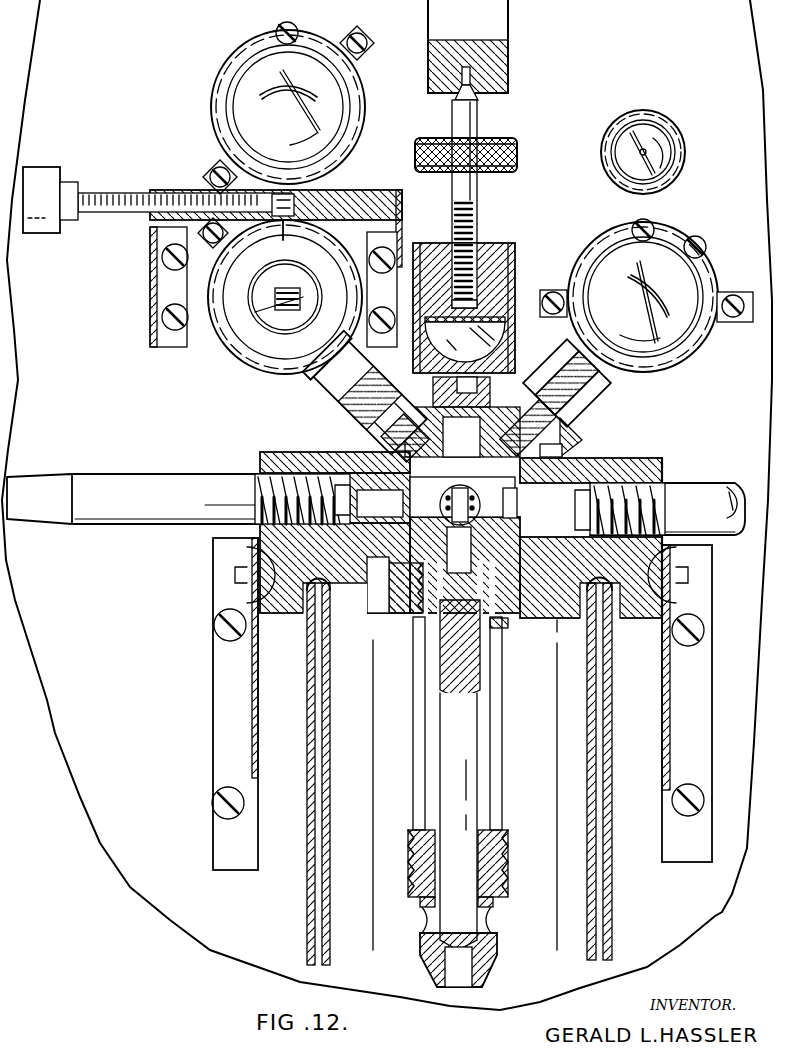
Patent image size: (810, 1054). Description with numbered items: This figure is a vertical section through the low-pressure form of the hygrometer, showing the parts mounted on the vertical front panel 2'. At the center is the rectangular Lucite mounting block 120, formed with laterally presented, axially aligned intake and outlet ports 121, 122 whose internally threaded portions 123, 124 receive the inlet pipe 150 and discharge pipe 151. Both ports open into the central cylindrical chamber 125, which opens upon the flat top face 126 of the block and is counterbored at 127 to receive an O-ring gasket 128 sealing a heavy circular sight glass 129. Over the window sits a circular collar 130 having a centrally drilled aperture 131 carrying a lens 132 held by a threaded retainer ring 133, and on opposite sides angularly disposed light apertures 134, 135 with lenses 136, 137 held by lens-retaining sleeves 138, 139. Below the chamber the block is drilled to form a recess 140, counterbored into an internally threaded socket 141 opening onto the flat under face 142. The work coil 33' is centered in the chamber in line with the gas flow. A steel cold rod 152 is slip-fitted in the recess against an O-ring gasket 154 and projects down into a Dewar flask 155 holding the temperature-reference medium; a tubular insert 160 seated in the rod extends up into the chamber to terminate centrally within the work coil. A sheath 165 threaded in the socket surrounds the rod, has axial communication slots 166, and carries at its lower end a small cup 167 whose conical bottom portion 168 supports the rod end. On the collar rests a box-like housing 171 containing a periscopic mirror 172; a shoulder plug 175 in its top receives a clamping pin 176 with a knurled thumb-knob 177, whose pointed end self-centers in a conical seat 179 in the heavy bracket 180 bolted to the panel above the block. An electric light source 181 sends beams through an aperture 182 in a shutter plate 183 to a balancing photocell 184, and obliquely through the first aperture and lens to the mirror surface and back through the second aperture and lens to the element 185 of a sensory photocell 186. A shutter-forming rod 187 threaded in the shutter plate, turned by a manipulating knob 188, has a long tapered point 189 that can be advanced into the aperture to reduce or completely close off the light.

The front panel 2' is at (387, 505).
The work coil 33' is at (462, 501).
The mounting block 120 is at (628, 620).
The intake port 121 is at (340, 458).
The outlet port 122 is at (592, 436).
The internally threaded portion 123 is at (282, 470).
The internally threaded portion 124 is at (638, 432).
The central cylindrical chamber 125 is at (368, 585).
The flat top face 126 is at (625, 455).
The counterbore 127 is at (380, 503).
The O-ring gasket 128 is at (556, 448).
The sight glass 129 is at (565, 430).
The circular collar 130 is at (497, 385).
The centrally drilled aperture 131 is at (454, 381).
The lens 132 is at (505, 355).
The threaded retainer ring 133 is at (567, 383).
The light aperture 134 is at (390, 440).
The light aperture 135 is at (512, 503).
The lens 136 is at (375, 382).
The lens 137 is at (567, 383).
The lens-retaining sleeve 138 is at (322, 388).
The lens-retaining sleeve 139 is at (603, 386).
The recess 140 is at (504, 556).
The internally threaded socket 141 is at (505, 626).
The flat under face 142 is at (410, 632).
The inlet pipe 150 is at (112, 512).
The discharge pipe 151 is at (710, 492).
The cold rod 152 is at (470, 783).
The O-ring gasket 154 is at (495, 647).
The Dewar flask 155 is at (612, 885).
The tubular insert 160 is at (395, 618).
The sheath 165 is at (507, 853).
The axial communication slots 166 is at (415, 715).
The cup 167 is at (496, 897).
The conical bottom portion 168 is at (486, 968).
The box-like housing 171 is at (515, 265).
The periscopic mirror 172 is at (465, 339).
The shoulder plug 175 is at (500, 244).
The clamping pin 176 is at (472, 190).
The knurled thumb-knob 177 is at (517, 150).
The conical seat 179 is at (477, 95).
The bracket 180 is at (500, 55).
The electric light source 181 is at (255, 312).
The aperture 182 is at (300, 203).
The shutter plate 183 is at (396, 194).
The balancing photocell 184 is at (340, 113).
The element 185 is at (636, 302).
The sensory photocell 186 is at (690, 283).
The shutter-forming rod 187 is at (128, 183).
The manipulating knob 188 is at (45, 232).
The tapered point 189 is at (284, 225).